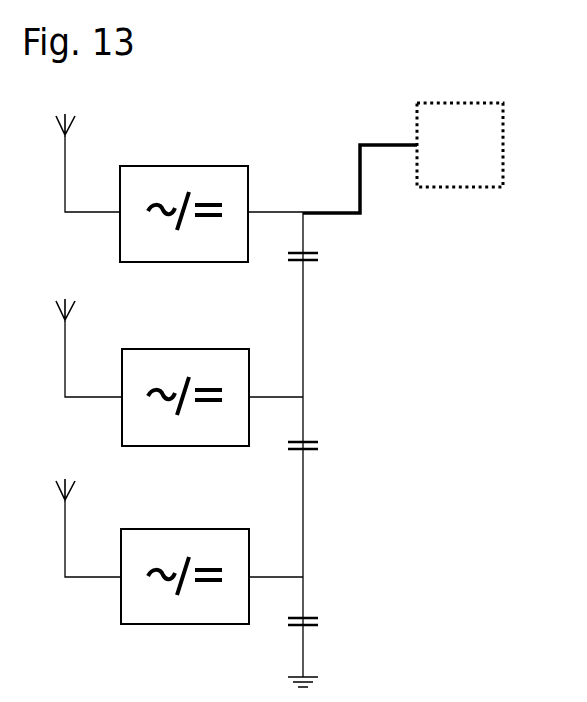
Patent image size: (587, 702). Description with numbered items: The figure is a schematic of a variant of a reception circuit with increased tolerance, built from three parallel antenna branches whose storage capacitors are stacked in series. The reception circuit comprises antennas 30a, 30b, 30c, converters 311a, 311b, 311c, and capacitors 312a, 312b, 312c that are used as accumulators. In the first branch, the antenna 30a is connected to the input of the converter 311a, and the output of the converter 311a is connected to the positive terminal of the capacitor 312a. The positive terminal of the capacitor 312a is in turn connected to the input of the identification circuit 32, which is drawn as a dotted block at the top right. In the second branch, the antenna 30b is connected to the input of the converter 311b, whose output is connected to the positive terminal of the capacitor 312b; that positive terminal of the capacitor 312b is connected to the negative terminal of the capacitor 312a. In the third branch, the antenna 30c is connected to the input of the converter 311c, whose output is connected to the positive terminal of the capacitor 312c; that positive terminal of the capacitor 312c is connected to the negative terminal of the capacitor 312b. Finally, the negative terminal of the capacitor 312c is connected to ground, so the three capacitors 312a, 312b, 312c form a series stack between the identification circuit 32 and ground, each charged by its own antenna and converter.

The antenna 30a is at (80, 128).
The antenna 30b is at (73, 312).
The antenna 30c is at (73, 492).
The converter 311a is at (233, 178).
The converter 311b is at (228, 362).
The converter 311c is at (228, 542).
The capacitor 312a is at (318, 253).
The capacitor 312b is at (313, 440).
The capacitor 312c is at (313, 617).
The identification circuit 32 is at (476, 161).